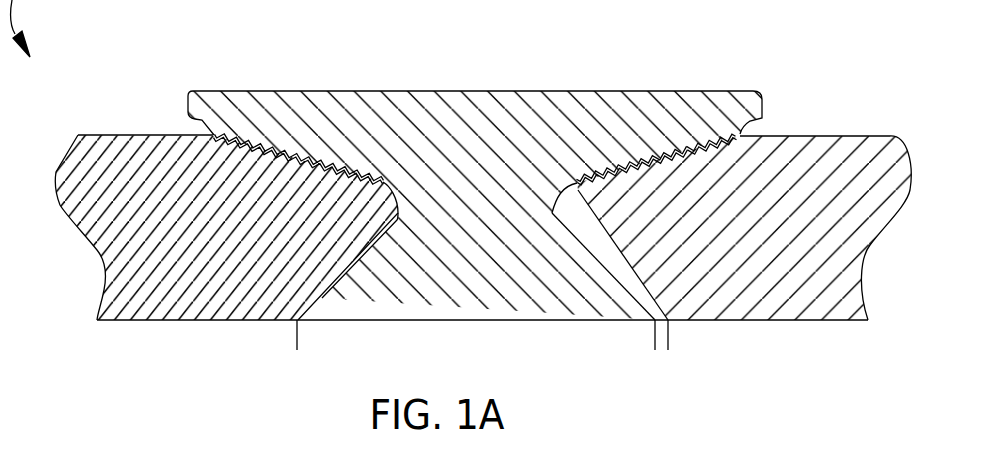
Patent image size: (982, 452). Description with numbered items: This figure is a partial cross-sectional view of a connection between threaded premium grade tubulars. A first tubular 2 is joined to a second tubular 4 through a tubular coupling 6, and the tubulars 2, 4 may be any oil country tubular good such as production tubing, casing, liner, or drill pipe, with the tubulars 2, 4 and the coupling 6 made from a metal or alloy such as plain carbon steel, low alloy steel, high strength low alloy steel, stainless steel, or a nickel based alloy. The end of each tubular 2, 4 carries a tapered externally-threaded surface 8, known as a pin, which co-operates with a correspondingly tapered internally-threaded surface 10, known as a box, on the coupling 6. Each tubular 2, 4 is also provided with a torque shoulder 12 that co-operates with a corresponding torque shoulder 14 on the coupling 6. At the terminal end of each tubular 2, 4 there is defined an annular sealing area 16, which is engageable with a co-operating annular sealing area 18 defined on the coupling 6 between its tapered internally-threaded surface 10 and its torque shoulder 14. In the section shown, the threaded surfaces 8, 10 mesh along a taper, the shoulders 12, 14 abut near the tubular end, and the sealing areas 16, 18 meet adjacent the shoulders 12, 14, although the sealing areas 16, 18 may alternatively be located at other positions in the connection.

The first tubular 2 is at (79, 135).
The second tubular 4 is at (828, 136).
The tubular coupling 6 is at (406, 91).
The tapered externally-threaded surface 8 is at (732, 158).
The tapered internally-threaded surface 10 is at (680, 152).
The torque shoulder 12 is at (640, 282).
The torque shoulder 14 is at (600, 237).
The annular sealing area 16 is at (567, 205).
The annular sealing area 18 is at (557, 182).